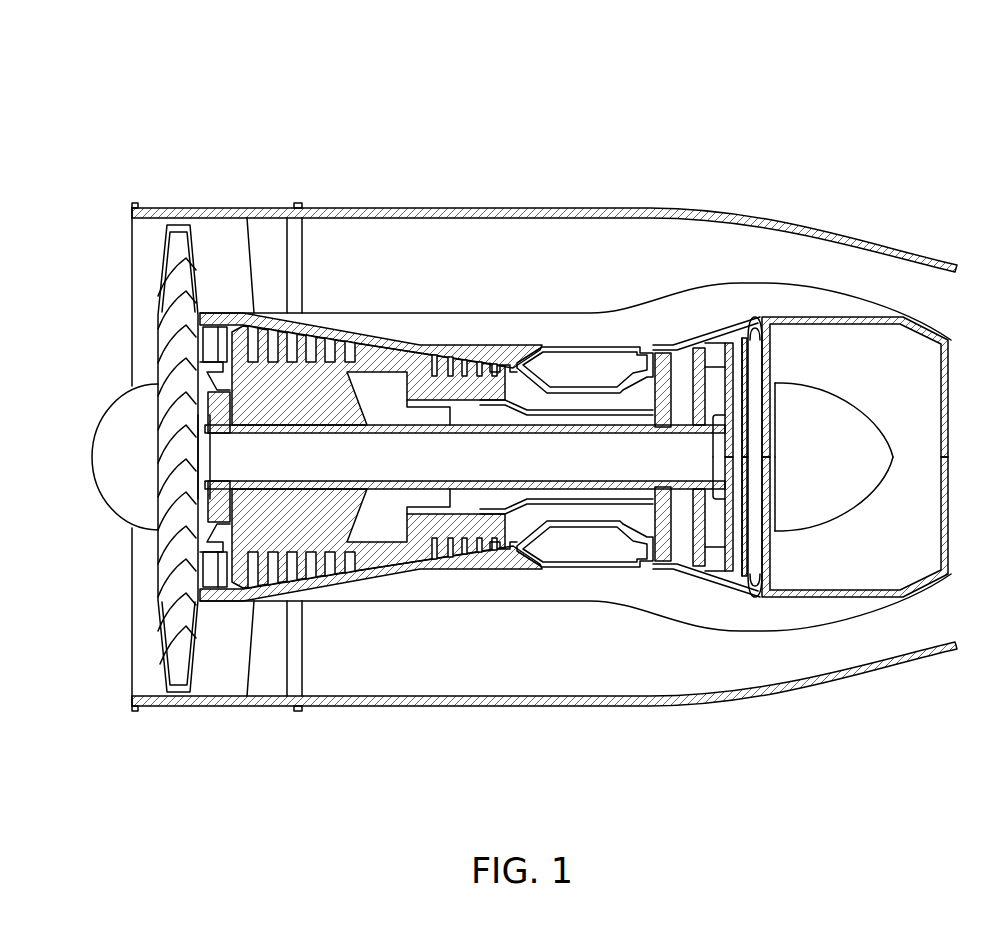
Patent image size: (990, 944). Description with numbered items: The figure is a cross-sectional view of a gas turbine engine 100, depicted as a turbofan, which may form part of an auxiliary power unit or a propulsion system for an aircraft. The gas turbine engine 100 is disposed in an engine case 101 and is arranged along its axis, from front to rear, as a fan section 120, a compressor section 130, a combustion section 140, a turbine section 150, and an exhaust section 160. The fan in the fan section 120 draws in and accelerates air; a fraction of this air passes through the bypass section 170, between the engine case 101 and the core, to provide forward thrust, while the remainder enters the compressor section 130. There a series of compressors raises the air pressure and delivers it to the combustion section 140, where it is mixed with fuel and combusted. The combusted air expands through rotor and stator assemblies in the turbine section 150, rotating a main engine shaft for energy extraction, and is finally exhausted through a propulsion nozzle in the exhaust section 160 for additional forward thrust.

The gas turbine engine 100 is at (354, 110).
The engine case 101 is at (357, 206).
The bypass section 170 is at (468, 238).
The fan section 120 is at (212, 742).
The compressor section 130 is at (212, 742).
The combustion section 140 is at (615, 742).
The turbine section 150 is at (615, 742).
The exhaust section 160 is at (900, 742).